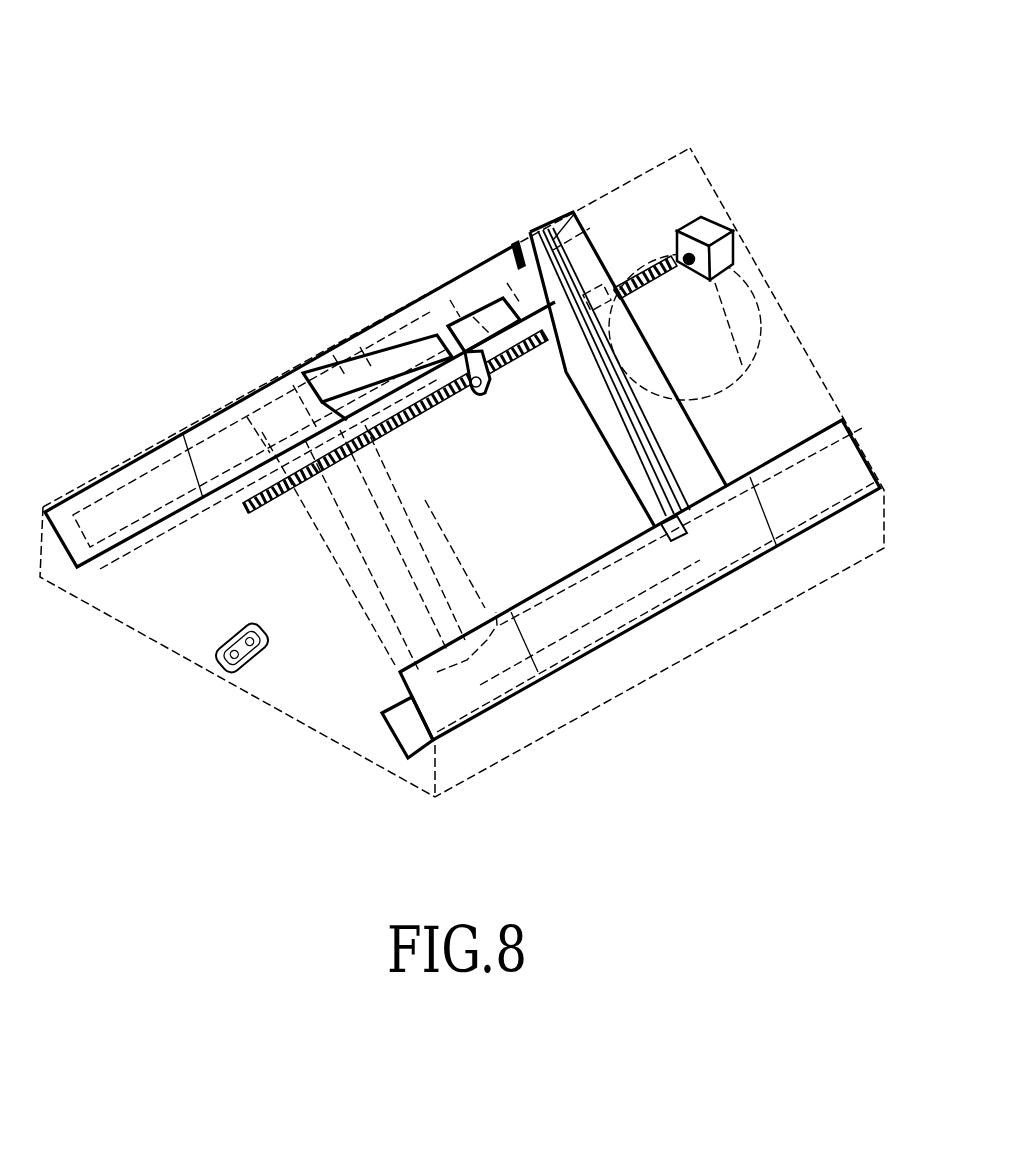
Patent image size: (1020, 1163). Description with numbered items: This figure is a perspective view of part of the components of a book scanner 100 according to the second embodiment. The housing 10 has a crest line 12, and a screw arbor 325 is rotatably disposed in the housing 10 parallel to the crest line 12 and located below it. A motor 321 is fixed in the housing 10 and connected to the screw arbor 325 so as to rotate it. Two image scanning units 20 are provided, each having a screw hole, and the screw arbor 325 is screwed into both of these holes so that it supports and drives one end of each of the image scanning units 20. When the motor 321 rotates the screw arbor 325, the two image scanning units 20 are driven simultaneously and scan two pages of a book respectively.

The book scanner 100 is at (276, 163).
The housing 10 is at (462, 410).
The crest line 12 is at (667, 233).
The image scanning units 20 is at (143, 452).
The motor 321 is at (709, 250).
The screw arbor 325 is at (460, 384).